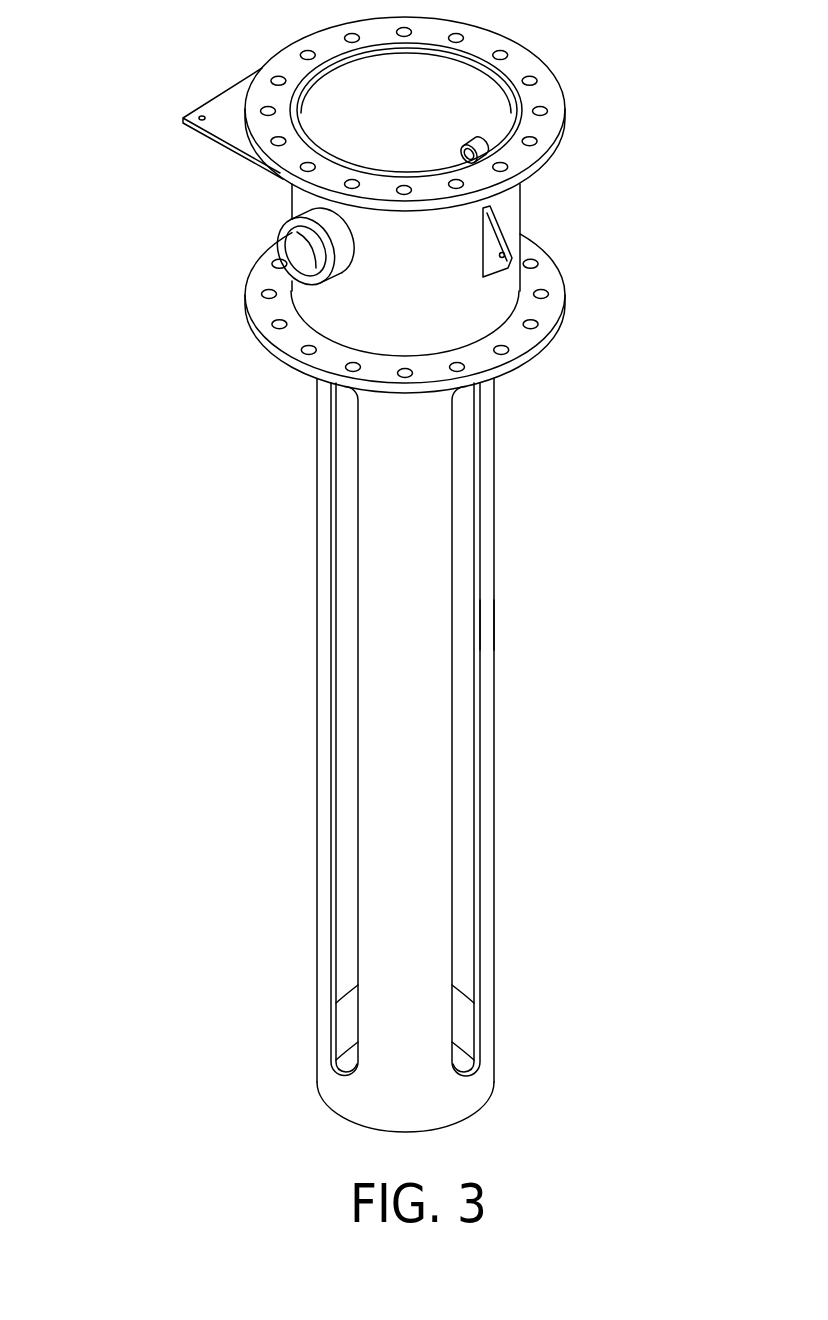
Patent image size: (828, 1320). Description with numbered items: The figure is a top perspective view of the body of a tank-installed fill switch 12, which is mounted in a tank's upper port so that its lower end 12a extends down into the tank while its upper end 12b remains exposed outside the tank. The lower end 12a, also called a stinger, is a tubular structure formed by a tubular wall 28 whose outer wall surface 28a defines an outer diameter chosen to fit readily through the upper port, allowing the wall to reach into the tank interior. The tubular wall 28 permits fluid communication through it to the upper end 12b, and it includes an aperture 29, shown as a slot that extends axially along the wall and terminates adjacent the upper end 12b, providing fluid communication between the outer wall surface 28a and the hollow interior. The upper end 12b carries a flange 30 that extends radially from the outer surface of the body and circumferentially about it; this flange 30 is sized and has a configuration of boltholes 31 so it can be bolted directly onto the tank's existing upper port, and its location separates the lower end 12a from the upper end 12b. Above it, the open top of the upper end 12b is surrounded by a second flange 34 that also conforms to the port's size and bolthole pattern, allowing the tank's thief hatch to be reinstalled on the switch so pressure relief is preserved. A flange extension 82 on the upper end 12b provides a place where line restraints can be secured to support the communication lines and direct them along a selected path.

The tank-installed switch 12 is at (647, 568).
The lower end 12a is at (494, 1100).
The upper end 12b is at (523, 198).
The tubular wall 28 is at (462, 756).
The outer wall surface 28a is at (487, 623).
The aperture 29 is at (477, 773).
The flange 30 is at (537, 353).
The boltholes 31 is at (548, 292).
The second flange 34 is at (543, 63).
The flange extension 82 is at (184, 112).